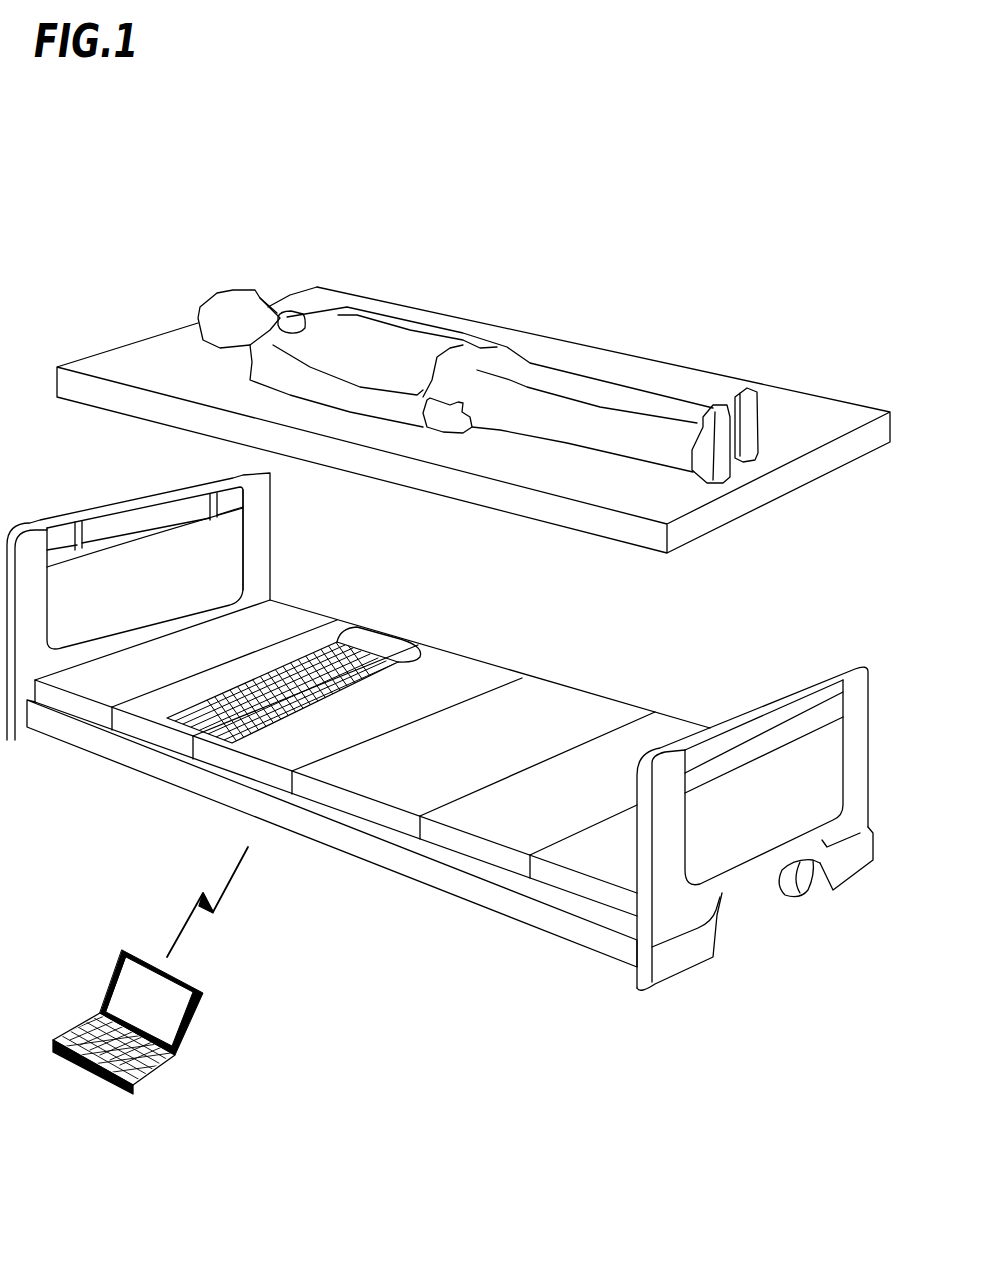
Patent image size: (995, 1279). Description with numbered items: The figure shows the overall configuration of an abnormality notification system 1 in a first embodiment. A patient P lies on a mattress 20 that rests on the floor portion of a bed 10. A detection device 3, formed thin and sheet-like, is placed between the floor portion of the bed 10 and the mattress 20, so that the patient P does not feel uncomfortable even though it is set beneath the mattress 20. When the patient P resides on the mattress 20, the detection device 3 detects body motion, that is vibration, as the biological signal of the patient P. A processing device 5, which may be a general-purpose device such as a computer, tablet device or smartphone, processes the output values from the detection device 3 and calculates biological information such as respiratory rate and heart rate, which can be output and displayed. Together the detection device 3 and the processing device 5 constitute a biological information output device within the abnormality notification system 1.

The abnormality notification system 1 is at (721, 171).
The detection device 3 is at (217, 733).
The processing device 5 is at (167, 1067).
The bed 10 is at (567, 918).
The mattress 20 is at (775, 405).
The patient P is at (510, 362).